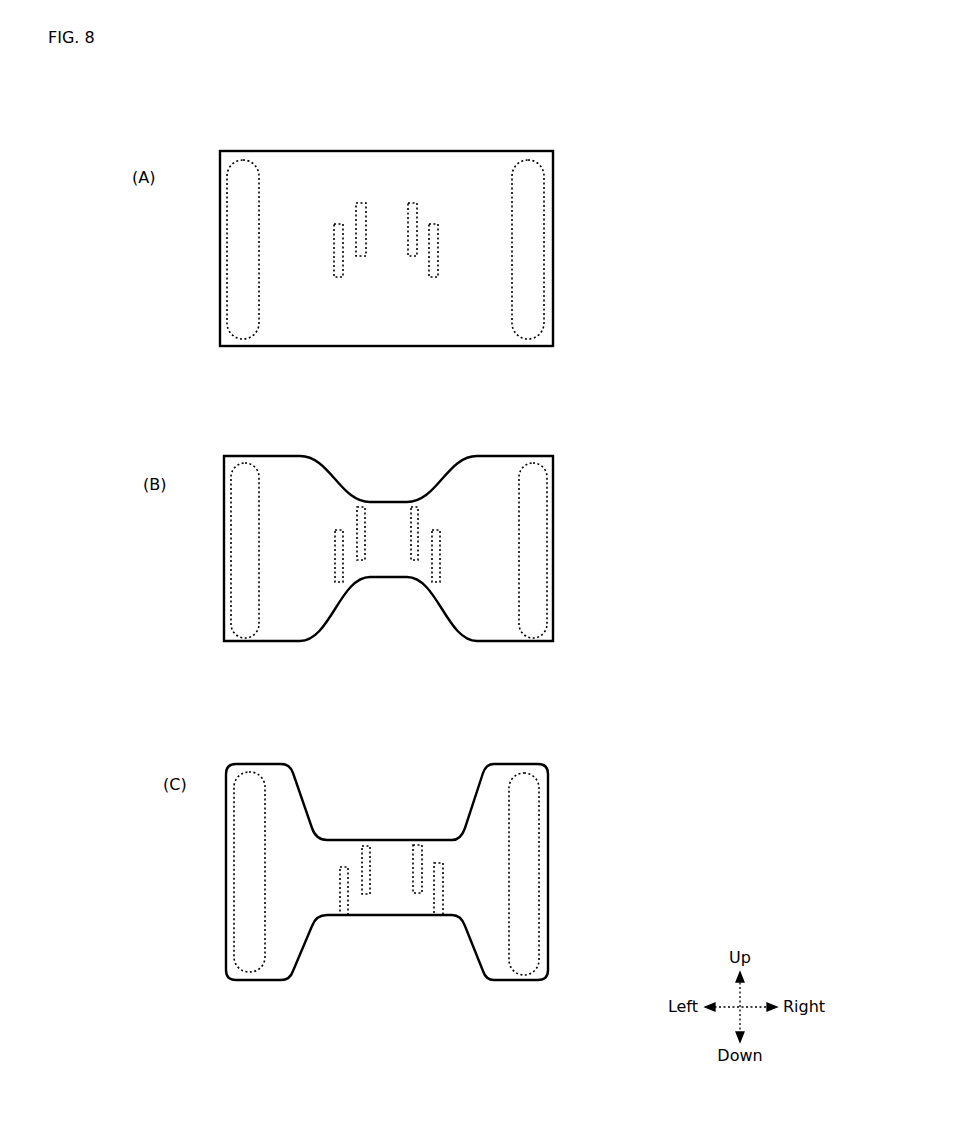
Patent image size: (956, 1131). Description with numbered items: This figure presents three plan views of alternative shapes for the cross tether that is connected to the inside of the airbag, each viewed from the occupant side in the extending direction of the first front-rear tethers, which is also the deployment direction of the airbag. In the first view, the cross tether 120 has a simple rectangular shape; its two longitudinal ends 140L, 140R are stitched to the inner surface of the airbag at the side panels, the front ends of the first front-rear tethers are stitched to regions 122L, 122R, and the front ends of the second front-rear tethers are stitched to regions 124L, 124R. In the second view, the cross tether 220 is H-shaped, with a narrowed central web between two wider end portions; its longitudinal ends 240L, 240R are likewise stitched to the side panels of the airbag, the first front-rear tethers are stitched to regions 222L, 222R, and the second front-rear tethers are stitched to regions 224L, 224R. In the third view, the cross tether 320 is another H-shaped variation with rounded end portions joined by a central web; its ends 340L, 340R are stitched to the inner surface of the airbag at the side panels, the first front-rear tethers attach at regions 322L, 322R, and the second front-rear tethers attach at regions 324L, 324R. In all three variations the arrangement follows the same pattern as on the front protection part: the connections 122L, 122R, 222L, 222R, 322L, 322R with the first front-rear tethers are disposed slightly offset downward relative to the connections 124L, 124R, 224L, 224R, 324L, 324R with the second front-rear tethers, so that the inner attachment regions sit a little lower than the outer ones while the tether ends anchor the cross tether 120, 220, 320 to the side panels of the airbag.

The cross tether 120 is at (589, 213).
The region 122L is at (336, 275).
The region 122R is at (433, 275).
The region 124L is at (361, 201).
The region 124R is at (411, 202).
The end 140L is at (231, 307).
The end 140R is at (543, 307).
The cross tether 220 is at (575, 523).
The region 222L is at (338, 584).
The region 222R is at (435, 530).
The region 224L is at (360, 561).
The region 224R is at (415, 504).
The end 240L is at (231, 592).
The end 240R is at (540, 585).
The cross tether 320 is at (560, 821).
The region 322L is at (341, 916).
The region 322R is at (436, 863).
The region 324L is at (364, 895).
The region 324R is at (420, 846).
The end 340L is at (234, 927).
The end 340R is at (548, 921).